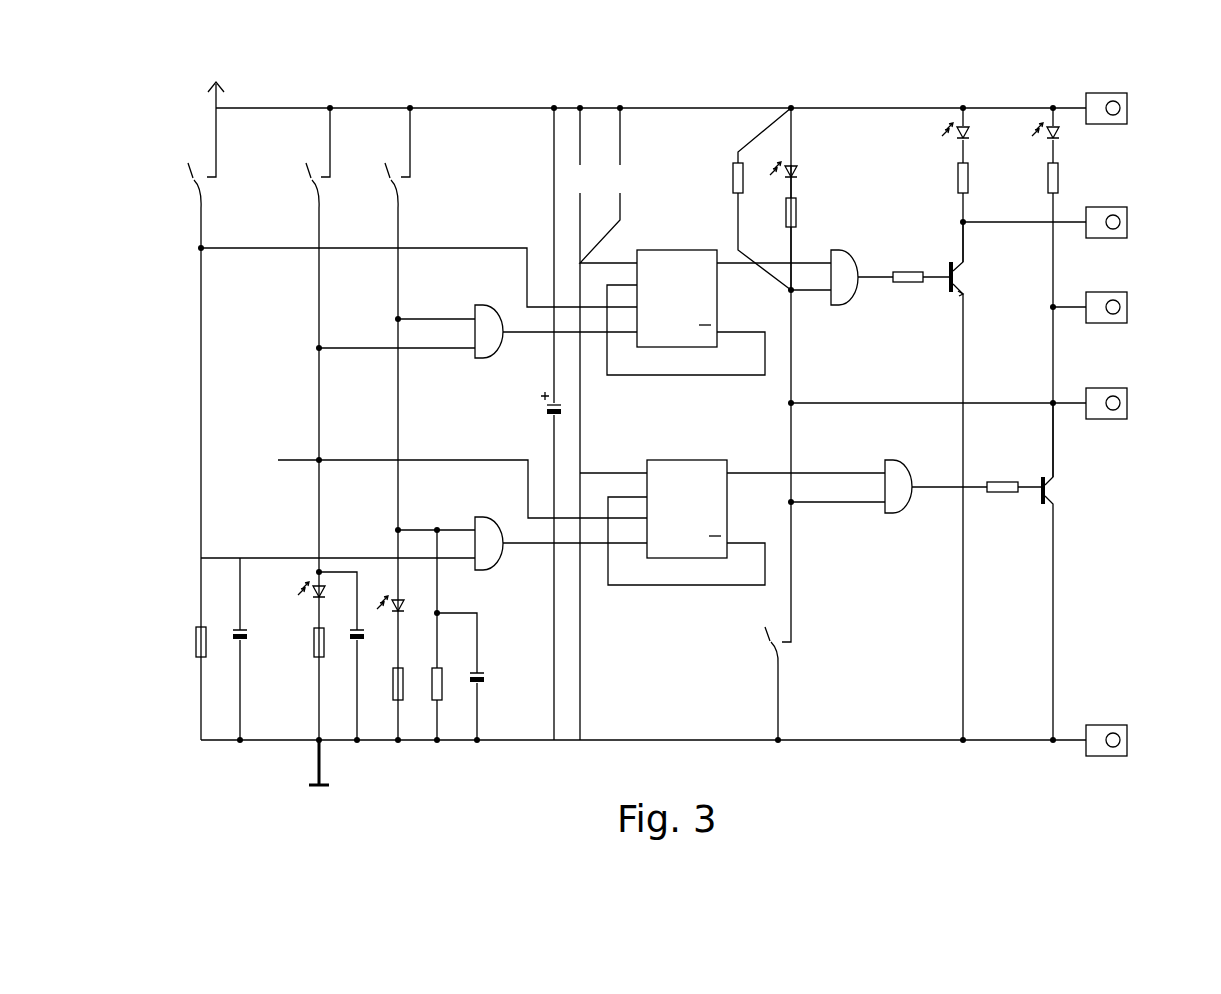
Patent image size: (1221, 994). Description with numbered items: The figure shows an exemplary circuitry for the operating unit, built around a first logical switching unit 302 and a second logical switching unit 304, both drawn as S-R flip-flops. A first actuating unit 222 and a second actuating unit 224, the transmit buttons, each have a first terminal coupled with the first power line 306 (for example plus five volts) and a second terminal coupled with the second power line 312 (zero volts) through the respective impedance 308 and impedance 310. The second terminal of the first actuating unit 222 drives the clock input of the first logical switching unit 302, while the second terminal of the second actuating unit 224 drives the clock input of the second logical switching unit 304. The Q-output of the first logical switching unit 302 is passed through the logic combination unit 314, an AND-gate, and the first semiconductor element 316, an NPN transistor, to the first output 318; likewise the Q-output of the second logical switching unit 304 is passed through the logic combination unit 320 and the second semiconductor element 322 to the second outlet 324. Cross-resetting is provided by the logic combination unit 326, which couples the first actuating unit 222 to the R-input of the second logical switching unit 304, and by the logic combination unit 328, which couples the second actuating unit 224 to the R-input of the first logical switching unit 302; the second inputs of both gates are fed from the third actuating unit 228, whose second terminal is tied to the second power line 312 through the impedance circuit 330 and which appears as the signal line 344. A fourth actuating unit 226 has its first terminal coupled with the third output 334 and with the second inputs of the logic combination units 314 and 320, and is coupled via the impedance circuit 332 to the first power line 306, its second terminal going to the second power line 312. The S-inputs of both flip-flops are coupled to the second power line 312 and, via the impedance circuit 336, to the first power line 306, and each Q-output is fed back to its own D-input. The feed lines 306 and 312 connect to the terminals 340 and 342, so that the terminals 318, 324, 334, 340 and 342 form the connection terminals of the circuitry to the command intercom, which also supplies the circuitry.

The first actuating unit 222 is at (190, 187).
The second actuating unit 224 is at (308, 187).
The fourth actuating unit 226 is at (768, 655).
The third actuating unit 228 is at (402, 187).
The first logical switching unit 302 is at (650, 250).
The second logical switching unit 304 is at (652, 460).
The first power line 306 is at (515, 104).
The impedance 308 is at (240, 713).
The impedance 310 is at (357, 713).
The second power line 312 is at (823, 741).
The logic combination unit 314 is at (866, 296).
The first semiconductor element 316 is at (962, 279).
The first output 318 is at (1115, 207).
The logic combination unit 320 is at (913, 513).
The second semiconductor element 322 is at (1041, 501).
The second outlet 324 is at (1115, 292).
The logic combination unit 326 is at (504, 570).
The logic combination unit 328 is at (501, 362).
The impedance circuit 330 is at (456, 728).
The impedance circuit 332 is at (792, 254).
The third output 334 is at (1115, 388).
The impedance circuit 336 is at (617, 143).
The terminal 340 is at (1115, 93).
The terminal 342 is at (1115, 725).
The signal line 344 is at (412, 318).